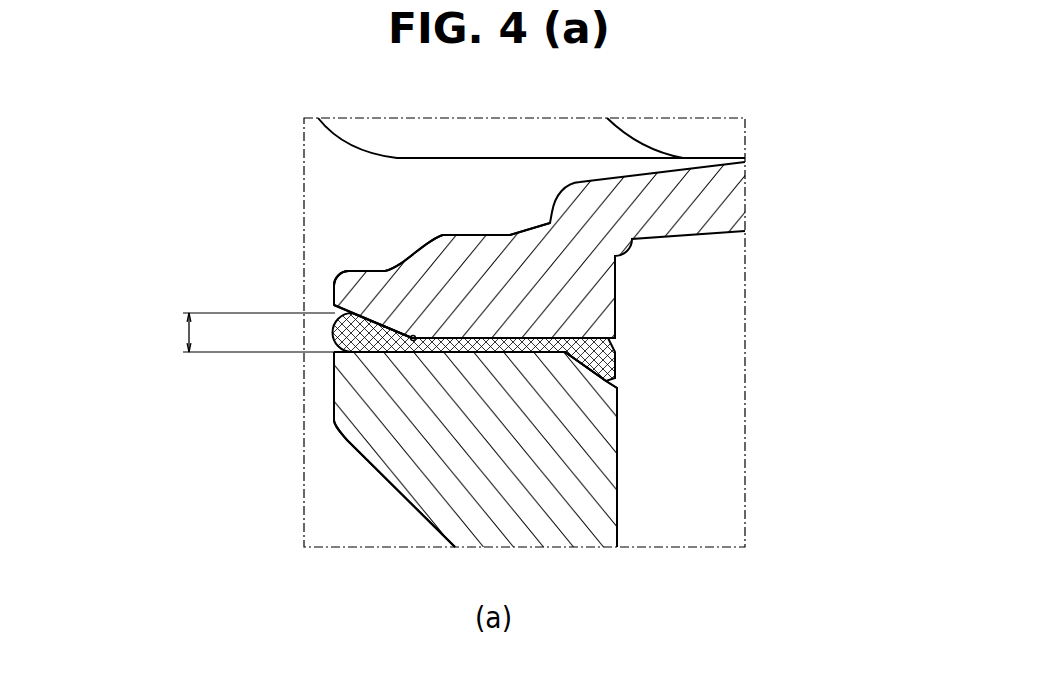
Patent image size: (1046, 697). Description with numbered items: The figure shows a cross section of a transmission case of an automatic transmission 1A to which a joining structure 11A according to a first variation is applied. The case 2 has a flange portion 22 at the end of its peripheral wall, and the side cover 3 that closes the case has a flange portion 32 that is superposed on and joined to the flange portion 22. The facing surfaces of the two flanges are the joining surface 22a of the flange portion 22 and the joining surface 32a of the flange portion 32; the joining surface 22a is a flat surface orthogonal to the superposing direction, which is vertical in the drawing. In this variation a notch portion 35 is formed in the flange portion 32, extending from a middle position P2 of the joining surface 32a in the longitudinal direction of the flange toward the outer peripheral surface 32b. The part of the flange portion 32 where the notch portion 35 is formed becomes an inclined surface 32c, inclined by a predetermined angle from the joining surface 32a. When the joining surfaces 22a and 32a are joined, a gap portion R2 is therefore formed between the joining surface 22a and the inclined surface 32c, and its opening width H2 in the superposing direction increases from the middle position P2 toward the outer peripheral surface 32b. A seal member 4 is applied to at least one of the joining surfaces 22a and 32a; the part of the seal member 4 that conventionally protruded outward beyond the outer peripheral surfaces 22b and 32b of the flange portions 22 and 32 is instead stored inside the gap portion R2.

The automatic transmission 1A is at (290, 133).
The joining structure 11A is at (280, 365).
The case 2 is at (618, 549).
The flange portion 22 is at (352, 395).
The joining surface 22a is at (465, 353).
The outer peripheral surface 22b is at (333, 388).
The side cover 3 is at (703, 237).
The flange portion 32 is at (347, 290).
The joining surface 32a is at (538, 336).
The outer peripheral surface 32b is at (333, 300).
The inclined surface 32c is at (395, 308).
The notch portion 35 is at (327, 308).
The seal member 4 is at (612, 363).
The opening width H2 is at (239, 332).
The middle position P2 is at (414, 335).
The gap portion R2 is at (350, 350).